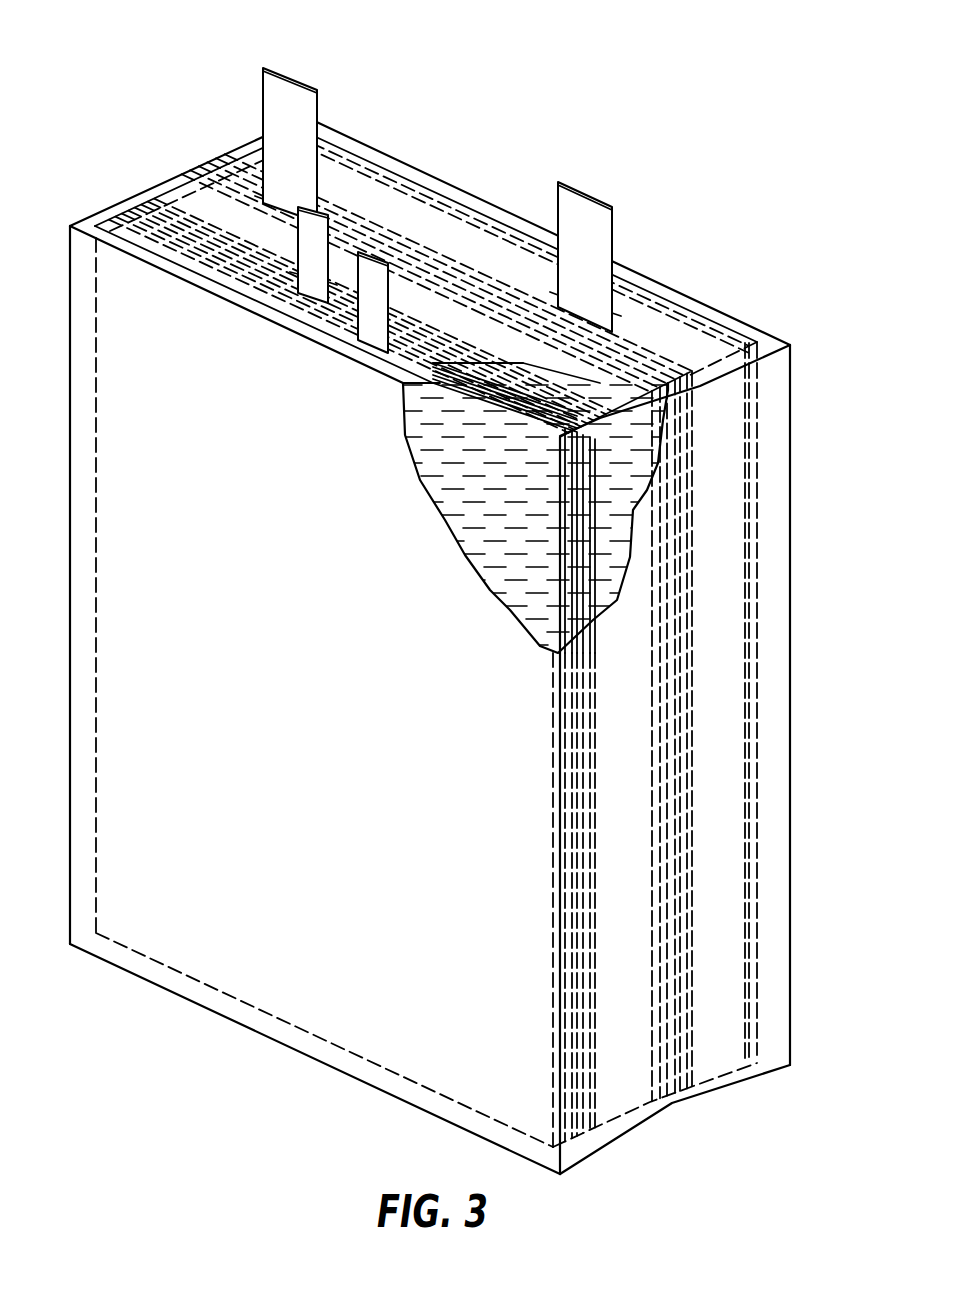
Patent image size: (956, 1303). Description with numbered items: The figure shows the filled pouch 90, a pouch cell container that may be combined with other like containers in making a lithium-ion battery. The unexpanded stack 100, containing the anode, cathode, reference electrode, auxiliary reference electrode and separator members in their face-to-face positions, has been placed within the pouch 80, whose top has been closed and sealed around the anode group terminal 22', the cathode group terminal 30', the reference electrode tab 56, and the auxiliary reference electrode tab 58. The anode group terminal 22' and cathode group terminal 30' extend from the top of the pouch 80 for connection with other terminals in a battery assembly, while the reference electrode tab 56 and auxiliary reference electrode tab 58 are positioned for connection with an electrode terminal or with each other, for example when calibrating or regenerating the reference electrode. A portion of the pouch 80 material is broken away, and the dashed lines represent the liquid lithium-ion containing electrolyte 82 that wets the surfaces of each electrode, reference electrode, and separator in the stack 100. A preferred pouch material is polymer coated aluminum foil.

The cathode group terminal 30' is at (331, 135).
The reference electrode tab 56 is at (311, 234).
The auxiliary reference electrode tab 58 is at (371, 266).
The anode group terminal 22' is at (629, 251).
The liquid lithium-ion containing electrolyte 82 is at (620, 437).
The filled pouch 90 is at (700, 274).
The unexpanded stack 100 is at (765, 430).
The pouch 80 is at (778, 488).